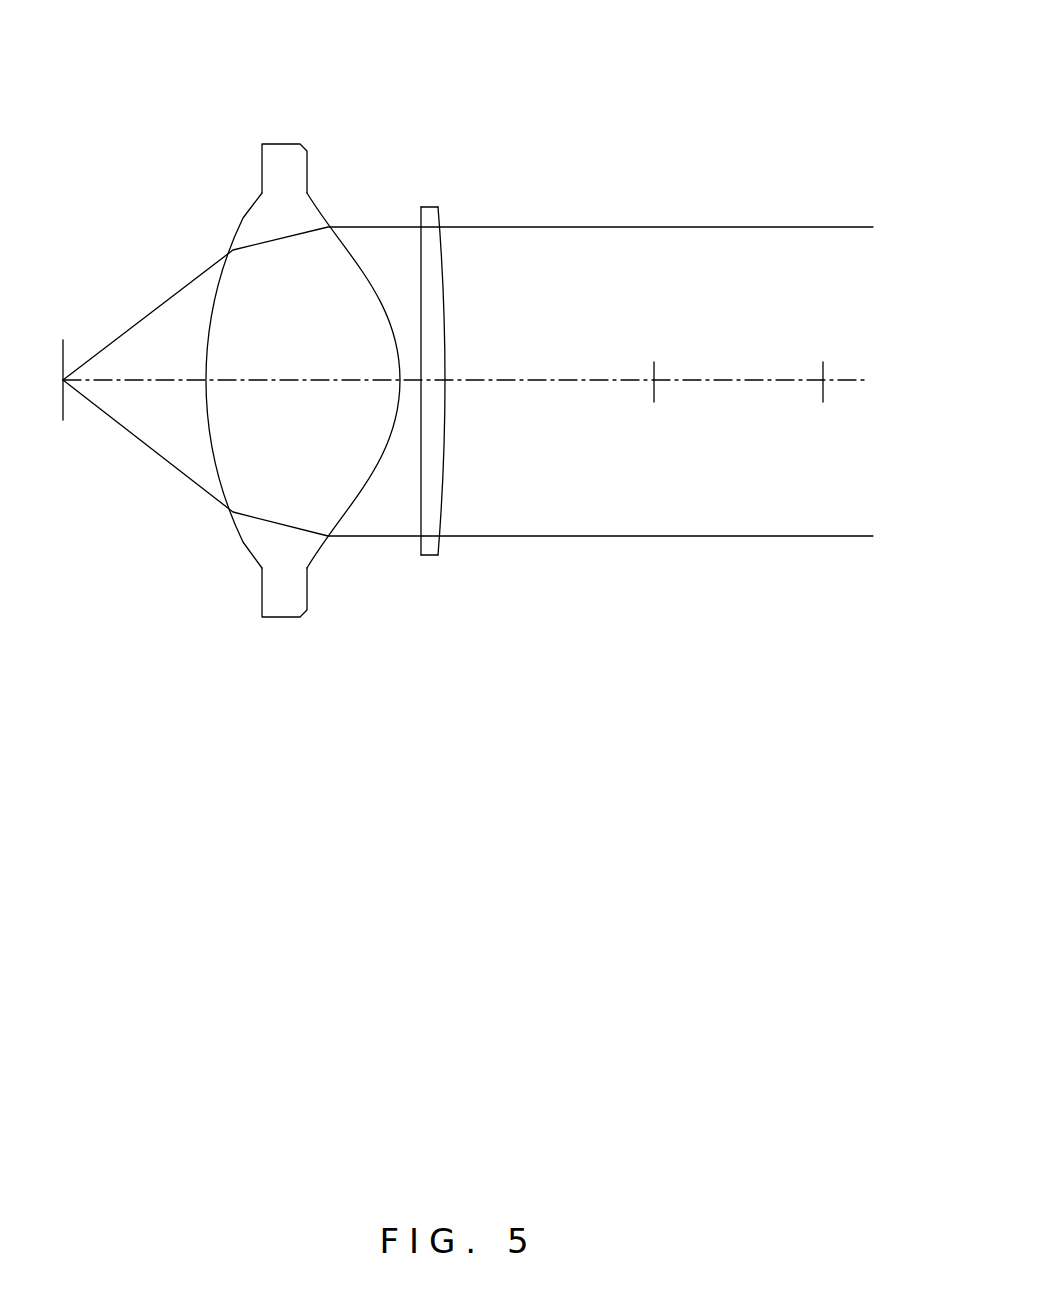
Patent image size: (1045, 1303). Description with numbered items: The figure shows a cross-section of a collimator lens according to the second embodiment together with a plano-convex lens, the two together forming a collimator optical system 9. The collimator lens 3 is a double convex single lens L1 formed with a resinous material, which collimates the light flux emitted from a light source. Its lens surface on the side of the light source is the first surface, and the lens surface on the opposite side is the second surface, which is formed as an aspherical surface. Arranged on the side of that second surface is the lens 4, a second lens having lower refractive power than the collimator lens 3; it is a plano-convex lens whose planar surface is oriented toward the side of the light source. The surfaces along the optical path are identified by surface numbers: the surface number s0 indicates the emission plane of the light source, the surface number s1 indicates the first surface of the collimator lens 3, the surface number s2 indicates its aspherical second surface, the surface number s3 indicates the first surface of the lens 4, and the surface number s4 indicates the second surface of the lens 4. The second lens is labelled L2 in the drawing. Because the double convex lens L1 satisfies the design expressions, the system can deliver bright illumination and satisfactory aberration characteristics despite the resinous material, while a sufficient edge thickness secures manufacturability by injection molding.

The collimator lens 3 is at (290, 100).
The lens 4 is at (445, 97).
The collimator optical system 9 is at (810, 42).
The surface number s0 is at (65, 362).
The surface number s1 is at (243, 222).
The surface number s2 is at (317, 208).
The surface number s3 is at (418, 238).
The surface number s4 is at (447, 240).
The double convex lens L1 is at (286, 600).
The second lens element L2 is at (434, 548).